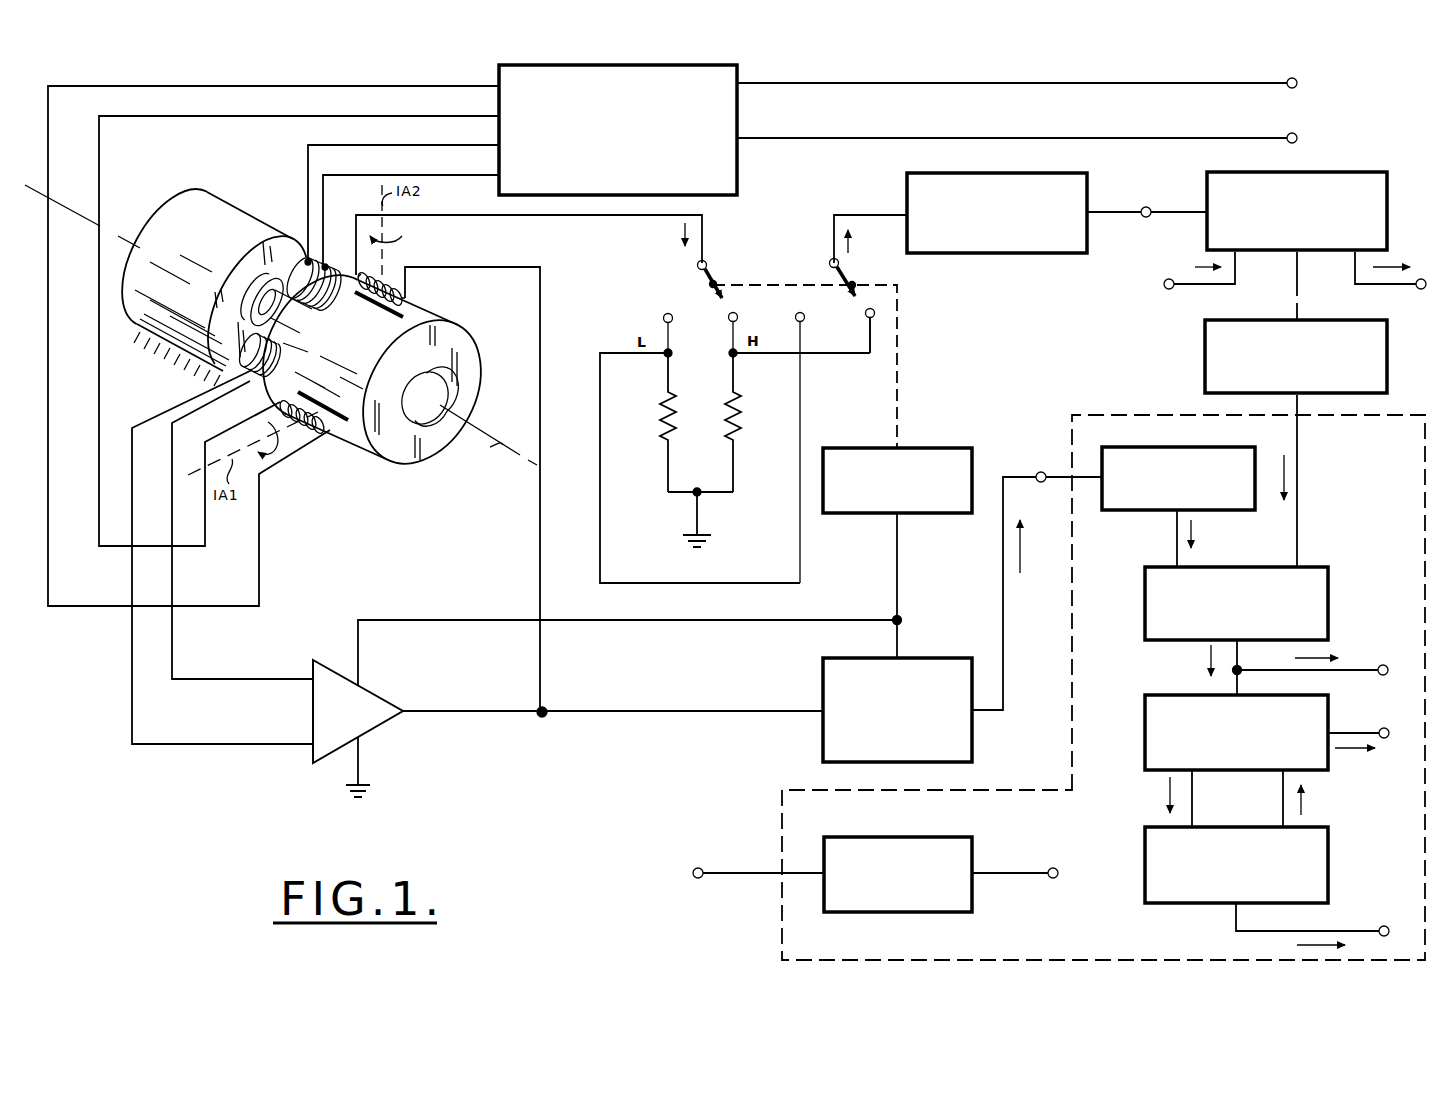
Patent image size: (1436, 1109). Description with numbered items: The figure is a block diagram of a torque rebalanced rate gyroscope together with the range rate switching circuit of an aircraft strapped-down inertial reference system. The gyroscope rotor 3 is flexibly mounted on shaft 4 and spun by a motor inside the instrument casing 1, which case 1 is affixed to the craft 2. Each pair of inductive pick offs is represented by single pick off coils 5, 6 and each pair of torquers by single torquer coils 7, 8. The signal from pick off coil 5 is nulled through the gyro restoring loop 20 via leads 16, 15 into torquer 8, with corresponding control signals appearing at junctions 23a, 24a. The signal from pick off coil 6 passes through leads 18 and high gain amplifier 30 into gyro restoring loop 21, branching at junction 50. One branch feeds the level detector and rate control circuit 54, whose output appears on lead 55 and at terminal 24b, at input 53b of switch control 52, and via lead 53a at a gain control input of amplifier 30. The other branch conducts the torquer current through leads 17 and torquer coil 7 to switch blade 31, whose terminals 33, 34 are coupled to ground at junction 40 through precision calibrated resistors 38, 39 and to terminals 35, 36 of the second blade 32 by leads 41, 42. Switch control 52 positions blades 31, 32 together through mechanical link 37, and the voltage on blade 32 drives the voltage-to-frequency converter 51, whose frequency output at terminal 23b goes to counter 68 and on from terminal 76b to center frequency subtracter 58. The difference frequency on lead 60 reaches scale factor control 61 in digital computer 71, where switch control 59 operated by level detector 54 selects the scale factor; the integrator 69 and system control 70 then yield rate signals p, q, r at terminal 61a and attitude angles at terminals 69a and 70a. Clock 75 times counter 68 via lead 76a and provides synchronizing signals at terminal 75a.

The instrument casing 1 is at (160, 194).
The craft 2 is at (138, 330).
The gyroscope rotor 3 is at (478, 373).
The shaft 4 is at (282, 292).
The pick off coil 5 is at (335, 262).
The pick off coil 6 is at (260, 380).
The torquer coil 7 is at (395, 288).
The torquer coil 8 is at (306, 433).
The leads 15 is at (260, 131).
The leads 16 is at (474, 189).
The leads 17 is at (507, 268).
The leads 18 is at (171, 637).
The gyro restoring loop 20 is at (738, 160).
The gyro restoring loop 21 is at (610, 721).
The junction 23a is at (1298, 82).
The junction 23b is at (1146, 206).
The junction 24a is at (1298, 136).
The junction 24b is at (1041, 471).
The high gain amplifier 30 is at (379, 692).
The switch blade 31 is at (712, 273).
The switch blade 32 is at (843, 272).
The switch terminal 33 is at (661, 315).
The switch terminal 34 is at (737, 312).
The switch terminal 35 is at (803, 313).
The switch terminal 36 is at (866, 318).
The mechanical link 37 is at (898, 337).
The precision calibrated resistor 38 is at (660, 423).
The precision calibrated resistor 39 is at (741, 418).
The ground junction 40 is at (691, 495).
The lead 41 is at (735, 583).
The lead 42 is at (843, 355).
The junction 50 is at (547, 708).
The voltage-to-frequency converter 51 is at (963, 175).
The switch control 52 is at (930, 447).
The lead 53a is at (840, 620).
The input 53b is at (900, 617).
The level detector and rate control circuit 54 is at (822, 675).
The lead 55 is at (1004, 652).
The center frequency subtracter 58 is at (1203, 368).
The switch control 59 is at (1123, 513).
The lead 60 is at (1300, 458).
The scale factor control 61 is at (1330, 588).
The terminal 61a is at (1383, 676).
The counter 68 is at (1368, 172).
The integrator 69 is at (1145, 723).
The terminal 69a is at (1389, 722).
The system control 70 is at (1145, 855).
The terminal 70a is at (1384, 926).
The digital computer 71 is at (1080, 415).
The clock 75 is at (898, 837).
The terminal 75a is at (1053, 879).
The lead 76a is at (1168, 279).
The terminal 76b is at (1421, 279).